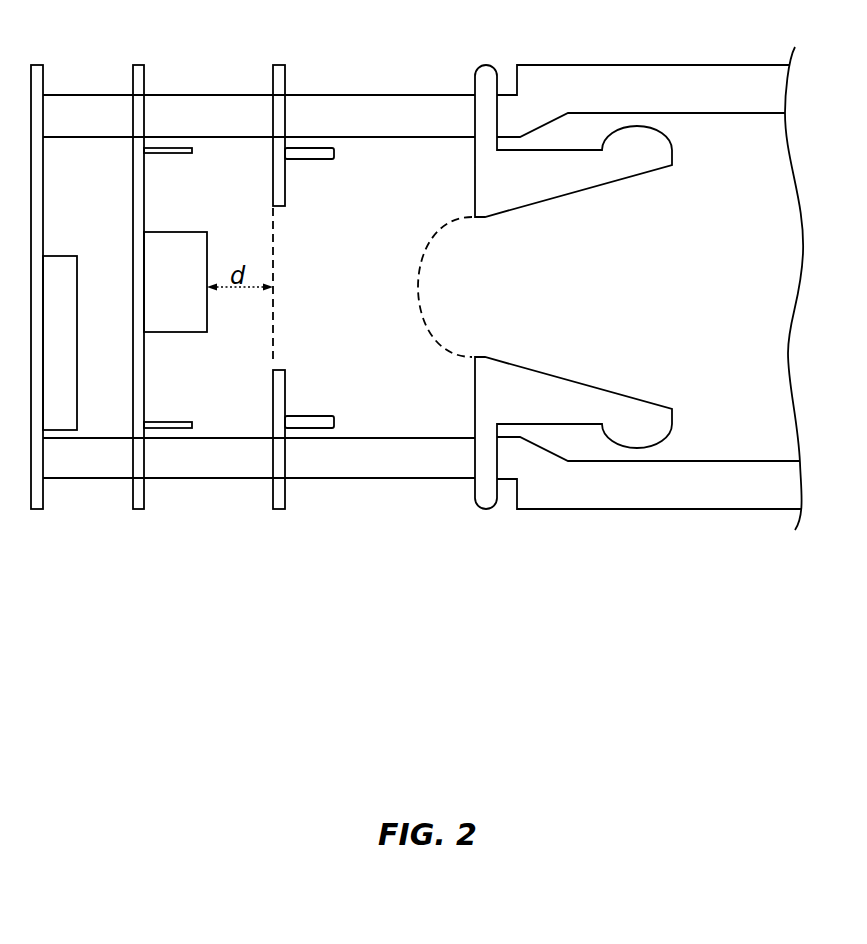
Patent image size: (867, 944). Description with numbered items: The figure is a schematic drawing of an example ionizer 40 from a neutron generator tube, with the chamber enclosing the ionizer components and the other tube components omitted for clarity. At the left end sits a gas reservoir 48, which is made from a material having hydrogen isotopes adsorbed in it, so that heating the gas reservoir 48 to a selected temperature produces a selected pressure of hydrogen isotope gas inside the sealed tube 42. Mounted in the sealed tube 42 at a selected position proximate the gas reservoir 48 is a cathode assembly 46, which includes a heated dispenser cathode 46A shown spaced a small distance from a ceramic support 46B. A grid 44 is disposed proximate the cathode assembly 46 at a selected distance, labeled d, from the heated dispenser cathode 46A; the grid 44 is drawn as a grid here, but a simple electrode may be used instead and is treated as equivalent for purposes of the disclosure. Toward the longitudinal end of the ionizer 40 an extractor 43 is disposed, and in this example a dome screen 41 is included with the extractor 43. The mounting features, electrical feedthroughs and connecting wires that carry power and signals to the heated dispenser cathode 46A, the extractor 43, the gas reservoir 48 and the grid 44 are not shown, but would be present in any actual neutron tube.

The ionizer 40 is at (426, 536).
The dome screen 41 is at (417, 277).
The sealed tube 42 is at (307, 94).
The extractor 43 is at (592, 188).
The grid 44 is at (275, 222).
The cathode assembly 46 is at (146, 182).
The heated dispenser cathode 46A is at (160, 332).
The ceramic support 46B is at (135, 220).
The gas reservoir 48 is at (59, 430).